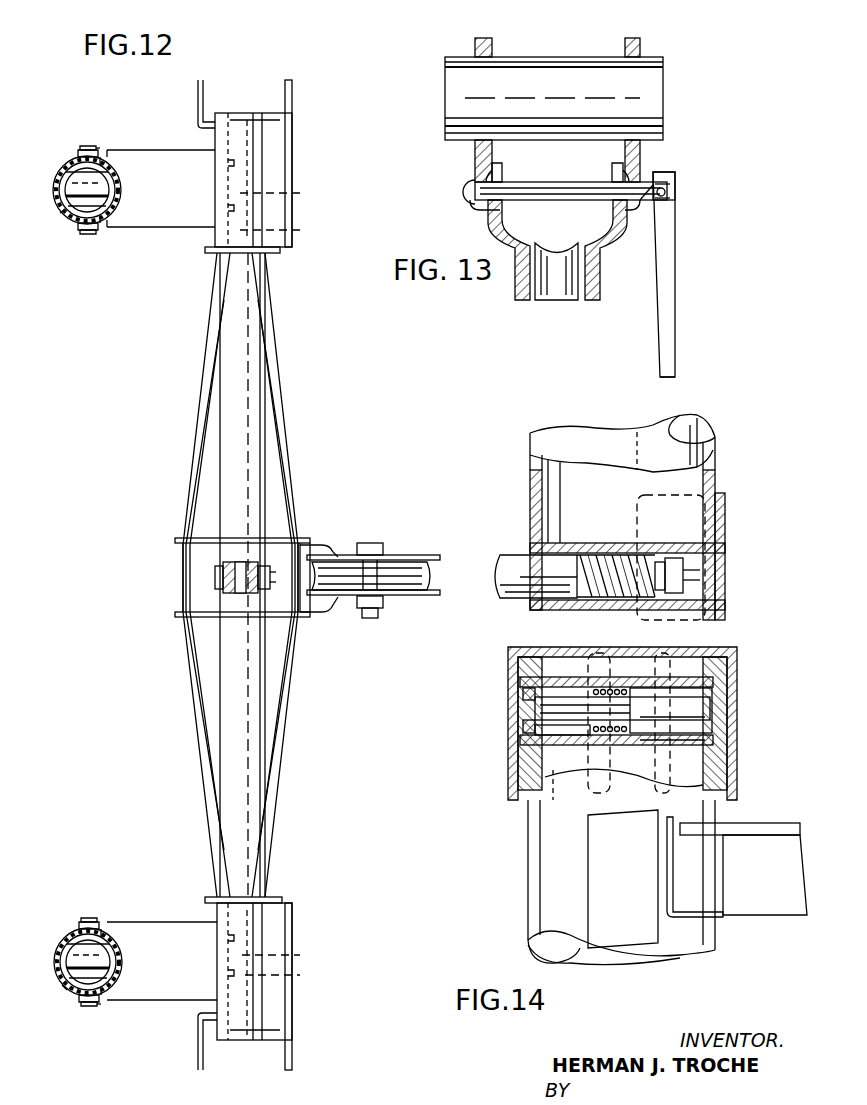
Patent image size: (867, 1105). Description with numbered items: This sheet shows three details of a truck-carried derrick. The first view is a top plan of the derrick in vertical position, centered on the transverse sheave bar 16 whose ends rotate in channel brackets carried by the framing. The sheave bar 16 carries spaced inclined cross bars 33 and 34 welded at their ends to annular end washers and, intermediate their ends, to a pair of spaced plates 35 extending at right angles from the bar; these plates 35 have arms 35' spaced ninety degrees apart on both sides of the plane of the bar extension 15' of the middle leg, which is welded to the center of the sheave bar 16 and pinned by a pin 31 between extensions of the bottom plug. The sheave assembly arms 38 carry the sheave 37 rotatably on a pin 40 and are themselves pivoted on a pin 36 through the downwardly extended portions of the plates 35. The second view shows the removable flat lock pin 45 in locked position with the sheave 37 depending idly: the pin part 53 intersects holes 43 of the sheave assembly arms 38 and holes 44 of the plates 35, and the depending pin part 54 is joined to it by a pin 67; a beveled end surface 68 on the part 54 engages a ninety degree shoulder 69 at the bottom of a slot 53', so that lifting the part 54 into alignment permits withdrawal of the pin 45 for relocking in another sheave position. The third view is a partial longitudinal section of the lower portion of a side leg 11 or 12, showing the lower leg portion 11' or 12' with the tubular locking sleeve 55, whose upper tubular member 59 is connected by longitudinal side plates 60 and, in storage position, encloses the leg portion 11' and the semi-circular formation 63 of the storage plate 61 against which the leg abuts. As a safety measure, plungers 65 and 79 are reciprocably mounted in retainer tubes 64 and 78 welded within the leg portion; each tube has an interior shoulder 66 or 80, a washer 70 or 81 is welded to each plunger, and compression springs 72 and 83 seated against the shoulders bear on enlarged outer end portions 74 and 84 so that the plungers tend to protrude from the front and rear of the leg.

In FIG. 12, the right A-frame side leg 11 is at (46, 1010).
In FIG. 14, the right A-frame side leg 11 is at (649, 517).
In FIG. 12, the lower leg portion 11' is at (73, 941).
In FIG. 14, the lower leg portion 11' is at (705, 535).
In FIG. 12, the left A-frame side leg 12 is at (75, 170).
In FIG. 12, the lower leg portion 12' is at (46, 236).
In FIG. 12, the bar extension 15' is at (197, 577).
In FIG. 12, the sheave bar 16 is at (242, 362).
In FIG. 13, the sheave bar 16 is at (655, 108).
In FIG. 12, the pin 31 is at (272, 580).
In FIG. 12, the inclined cross bar 33 is at (205, 387).
In FIG. 12, the inclined cross bar 34 is at (263, 322).
In FIG. 12, the sheave bar plate 35 is at (205, 575).
In FIG. 13, the sheave bar plate 35 is at (580, 93).
In FIG. 12, the arm of plate 35' is at (227, 547).
In FIG. 13, the arm of plate 35' is at (579, 221).
In FIG. 12, the pin 36 is at (302, 600).
In FIG. 12, the sheave 37 is at (405, 580).
In FIG. 13, the sheave 37 is at (558, 290).
In FIG. 12, the sheave assembly arms 38 is at (428, 554).
In FIG. 13, the sheave assembly arms 38 is at (520, 302).
In FIG. 12, the pin 40 is at (370, 622).
In FIG. 13, the hole 43 is at (503, 182).
In FIG. 13, the hole 44 is at (468, 182).
In FIG. 13, the lock pin 45 is at (676, 300).
In FIG. 13, the locking pin part 53 is at (571, 203).
In FIG. 13, the slot 53' is at (688, 181).
In FIG. 13, the depending locking pin part 54 is at (677, 346).
In FIG. 14, the locking sleeve 55 is at (507, 755).
In FIG. 14, the upper tubular member 59 is at (518, 790).
In FIG. 14, the longitudinal side plate 60 is at (600, 865).
In FIG. 14, the storage plate 61 is at (765, 905).
In FIG. 14, the semi-circular formation 63 is at (720, 708).
In FIG. 14, the retainer tube 64 is at (700, 742).
In FIG. 14, the plunger 65 is at (690, 720).
In FIG. 14, the interior shoulder 66 is at (582, 735).
In FIG. 13, the pin 67 is at (667, 192).
In FIG. 13, the beveled end surface 68 is at (677, 172).
In FIG. 13, the shoulder 69 is at (668, 200).
In FIG. 14, the washer 70 is at (522, 694).
In FIG. 14, the compression spring 72 is at (616, 690).
In FIG. 14, the enlarged outer end portion 74 is at (700, 700).
In FIG. 14, the retainer tube 78 is at (540, 543).
In FIG. 14, the plunger 79 is at (612, 560).
In FIG. 14, the interior shoulder 80 is at (660, 560).
In FIG. 14, the washer 81 is at (672, 574).
In FIG. 14, the compression spring 83 is at (580, 575).
In FIG. 14, the enlarged outer end portion 84 is at (507, 558).